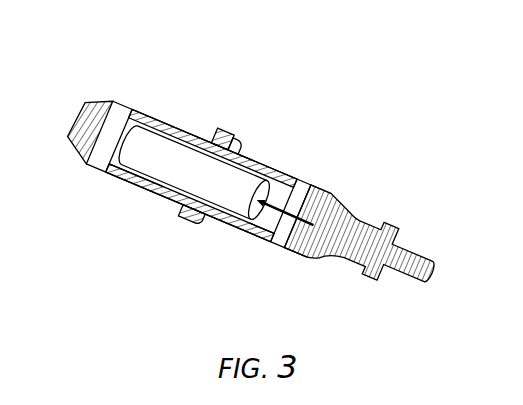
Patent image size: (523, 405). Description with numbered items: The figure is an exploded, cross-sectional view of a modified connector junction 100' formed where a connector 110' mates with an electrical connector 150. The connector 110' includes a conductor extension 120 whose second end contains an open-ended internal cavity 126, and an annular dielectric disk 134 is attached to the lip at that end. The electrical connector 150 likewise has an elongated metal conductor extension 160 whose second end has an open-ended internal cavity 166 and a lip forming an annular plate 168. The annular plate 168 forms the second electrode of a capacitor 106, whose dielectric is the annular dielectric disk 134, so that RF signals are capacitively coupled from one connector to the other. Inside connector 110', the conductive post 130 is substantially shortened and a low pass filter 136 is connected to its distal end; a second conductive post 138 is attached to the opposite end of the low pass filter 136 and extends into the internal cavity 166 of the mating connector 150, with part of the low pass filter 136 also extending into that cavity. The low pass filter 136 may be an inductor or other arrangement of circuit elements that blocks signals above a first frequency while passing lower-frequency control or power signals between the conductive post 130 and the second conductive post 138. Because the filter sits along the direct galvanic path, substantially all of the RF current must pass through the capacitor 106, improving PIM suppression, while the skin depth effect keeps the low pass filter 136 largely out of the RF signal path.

The connector junction 100' is at (267, 168).
The capacitor 106 is at (186, 233).
The connector 110' is at (248, 168).
The conductor extension 120 is at (82, 103).
The internal cavity 126 is at (130, 174).
The conductive post 130 is at (160, 132).
The annular dielectric disk 134 is at (216, 126).
The low pass filter 136 is at (230, 232).
The second conductive post 138 is at (281, 218).
The electrical connector 150 is at (410, 146).
The conductor extension 160 is at (366, 228).
The internal cavity 166 is at (268, 222).
The annular plate 168 is at (242, 148).